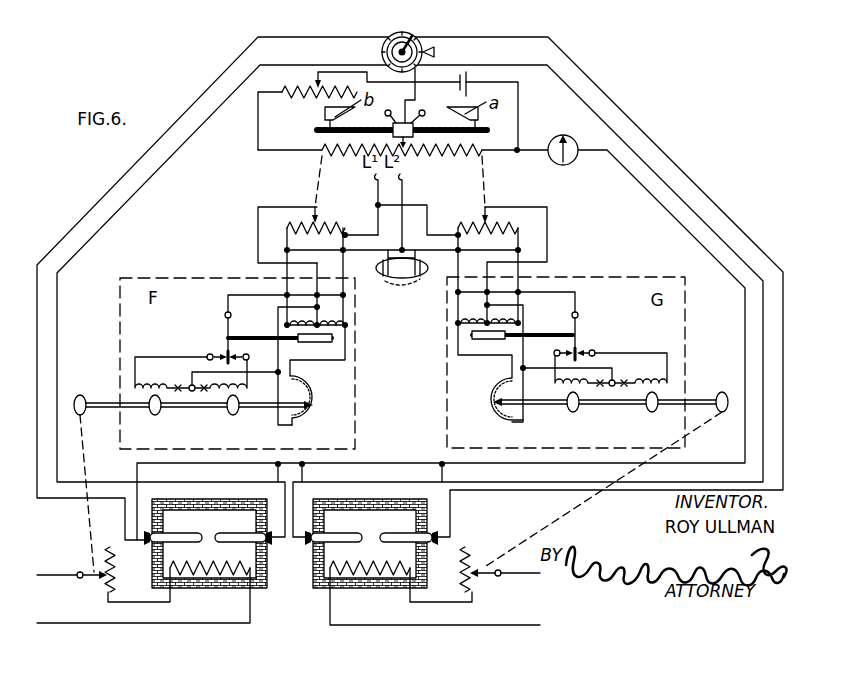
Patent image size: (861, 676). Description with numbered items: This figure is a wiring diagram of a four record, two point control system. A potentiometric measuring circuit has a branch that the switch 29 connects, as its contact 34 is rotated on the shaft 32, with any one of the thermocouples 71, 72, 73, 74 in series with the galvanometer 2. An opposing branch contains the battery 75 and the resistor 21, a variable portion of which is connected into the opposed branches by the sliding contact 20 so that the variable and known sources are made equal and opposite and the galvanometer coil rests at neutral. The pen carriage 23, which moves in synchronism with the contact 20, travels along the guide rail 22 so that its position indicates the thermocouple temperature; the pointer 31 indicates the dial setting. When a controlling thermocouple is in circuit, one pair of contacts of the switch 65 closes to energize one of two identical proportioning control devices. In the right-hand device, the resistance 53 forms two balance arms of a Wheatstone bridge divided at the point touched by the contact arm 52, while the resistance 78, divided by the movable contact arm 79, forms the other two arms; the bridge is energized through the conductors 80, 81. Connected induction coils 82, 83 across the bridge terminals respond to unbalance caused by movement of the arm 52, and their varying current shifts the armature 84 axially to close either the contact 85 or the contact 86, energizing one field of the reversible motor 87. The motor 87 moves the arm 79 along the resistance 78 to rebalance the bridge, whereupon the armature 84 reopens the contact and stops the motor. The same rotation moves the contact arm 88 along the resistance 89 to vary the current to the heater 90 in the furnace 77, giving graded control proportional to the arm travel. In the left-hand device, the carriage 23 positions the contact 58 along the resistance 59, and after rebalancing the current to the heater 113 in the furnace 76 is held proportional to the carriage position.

The galvanometer 2 is at (553, 142).
The sliding contact 20 is at (418, 156).
The resistor 21 is at (358, 156).
The guide rail 22 is at (316, 130).
The pen carriage 23 is at (392, 112).
The switch 29 is at (394, 28).
The index pointer 31 is at (434, 52).
The shaft 32 is at (385, 53).
The contact 34 is at (413, 38).
The contact arm 52 is at (483, 216).
The resistance 53 is at (505, 228).
The contact 58 is at (318, 214).
The resistance 59 is at (292, 231).
The switch 65 is at (399, 278).
The thermocouple 71 is at (178, 537).
The thermocouple 72 is at (229, 537).
The thermocouple 73 is at (337, 538).
The thermocouple 74 is at (410, 536).
The battery 75 is at (468, 88).
The furnace 76 is at (268, 556).
The furnace 77 is at (318, 568).
The resistance 78 is at (491, 395).
The movable contact arm 79 is at (497, 410).
The conductor 80 is at (410, 206).
The conductor 81 is at (430, 282).
The induction coil 82 is at (460, 318).
The induction coil 83 is at (520, 312).
The armature 84 is at (490, 341).
The contact 85 is at (574, 348).
The contact 86 is at (594, 352).
The reversible motor 87 is at (606, 406).
The contact arm 88 is at (477, 566).
The resistance 89 is at (465, 547).
The heater 90 is at (350, 566).
The heater 113 is at (220, 562).